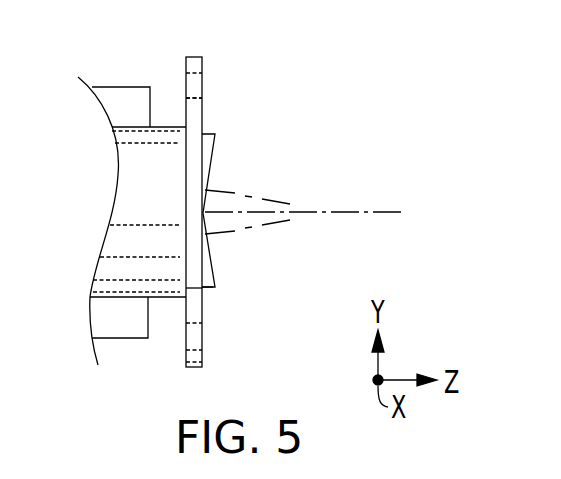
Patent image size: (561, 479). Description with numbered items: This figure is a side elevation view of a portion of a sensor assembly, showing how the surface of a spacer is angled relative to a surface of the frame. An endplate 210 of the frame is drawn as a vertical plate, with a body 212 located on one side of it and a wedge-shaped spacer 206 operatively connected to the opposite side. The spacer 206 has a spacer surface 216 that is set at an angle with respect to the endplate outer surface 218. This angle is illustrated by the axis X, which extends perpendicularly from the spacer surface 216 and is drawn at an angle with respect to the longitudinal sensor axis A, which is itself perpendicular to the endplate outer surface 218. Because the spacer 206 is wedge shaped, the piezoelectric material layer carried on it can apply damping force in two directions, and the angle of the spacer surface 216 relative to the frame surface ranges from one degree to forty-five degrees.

The spacer 206 is at (208, 288).
The endplate 210 is at (202, 64).
The body 212 is at (140, 158).
The spacer surface 216 is at (215, 137).
The endplate outer surface 218 is at (202, 107).
The sensor axis A is at (390, 212).
The axis X is at (290, 205).